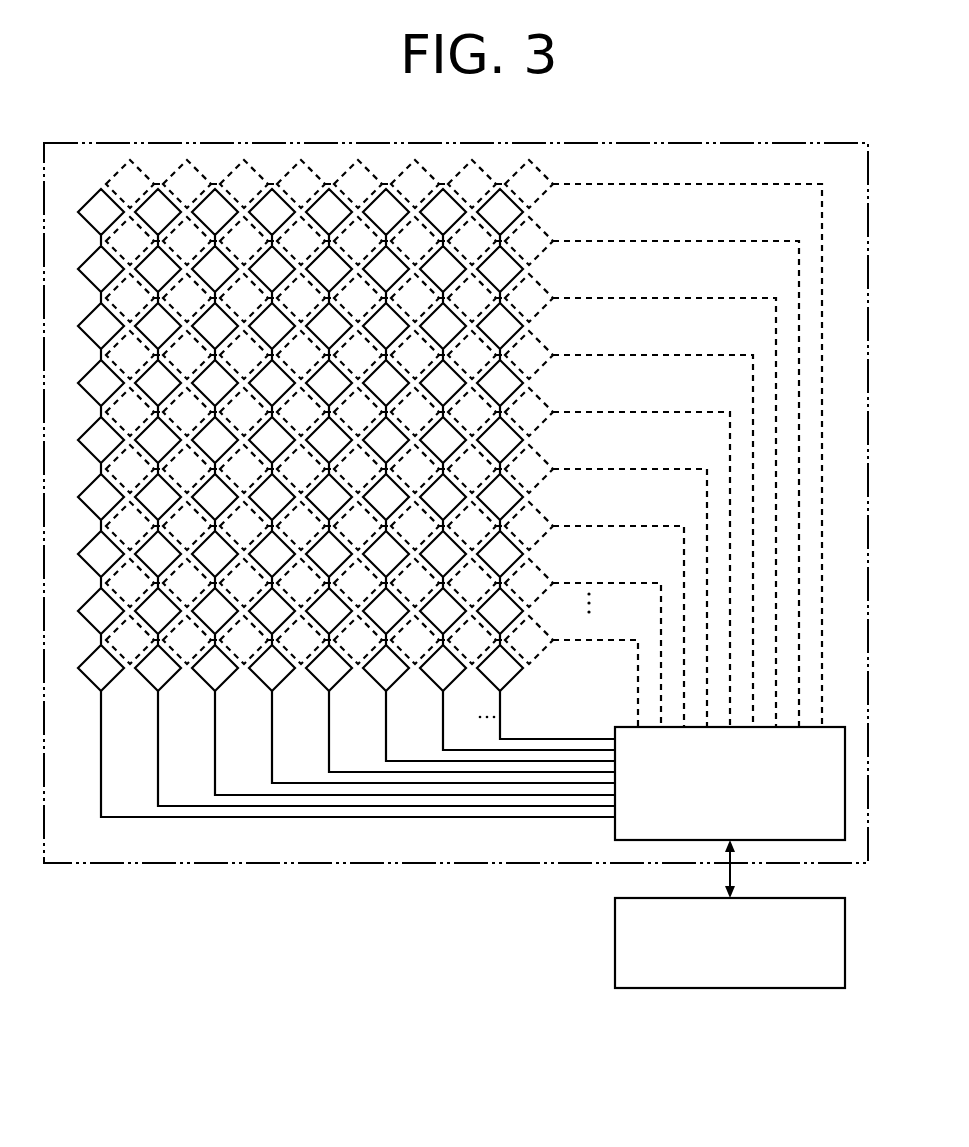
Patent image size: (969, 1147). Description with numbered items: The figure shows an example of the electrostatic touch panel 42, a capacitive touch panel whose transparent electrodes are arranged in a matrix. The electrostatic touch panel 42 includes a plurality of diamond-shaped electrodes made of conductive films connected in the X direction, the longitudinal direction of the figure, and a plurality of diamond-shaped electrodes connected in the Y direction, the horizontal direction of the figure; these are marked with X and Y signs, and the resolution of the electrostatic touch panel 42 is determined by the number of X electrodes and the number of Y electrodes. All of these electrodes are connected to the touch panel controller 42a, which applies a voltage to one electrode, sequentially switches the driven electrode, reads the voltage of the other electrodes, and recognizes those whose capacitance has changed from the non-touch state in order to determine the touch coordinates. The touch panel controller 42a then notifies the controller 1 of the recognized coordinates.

The electrostatic touch panel 42 is at (41, 876).
The touch panel controller 42a is at (832, 782).
The controller 1 is at (832, 943).